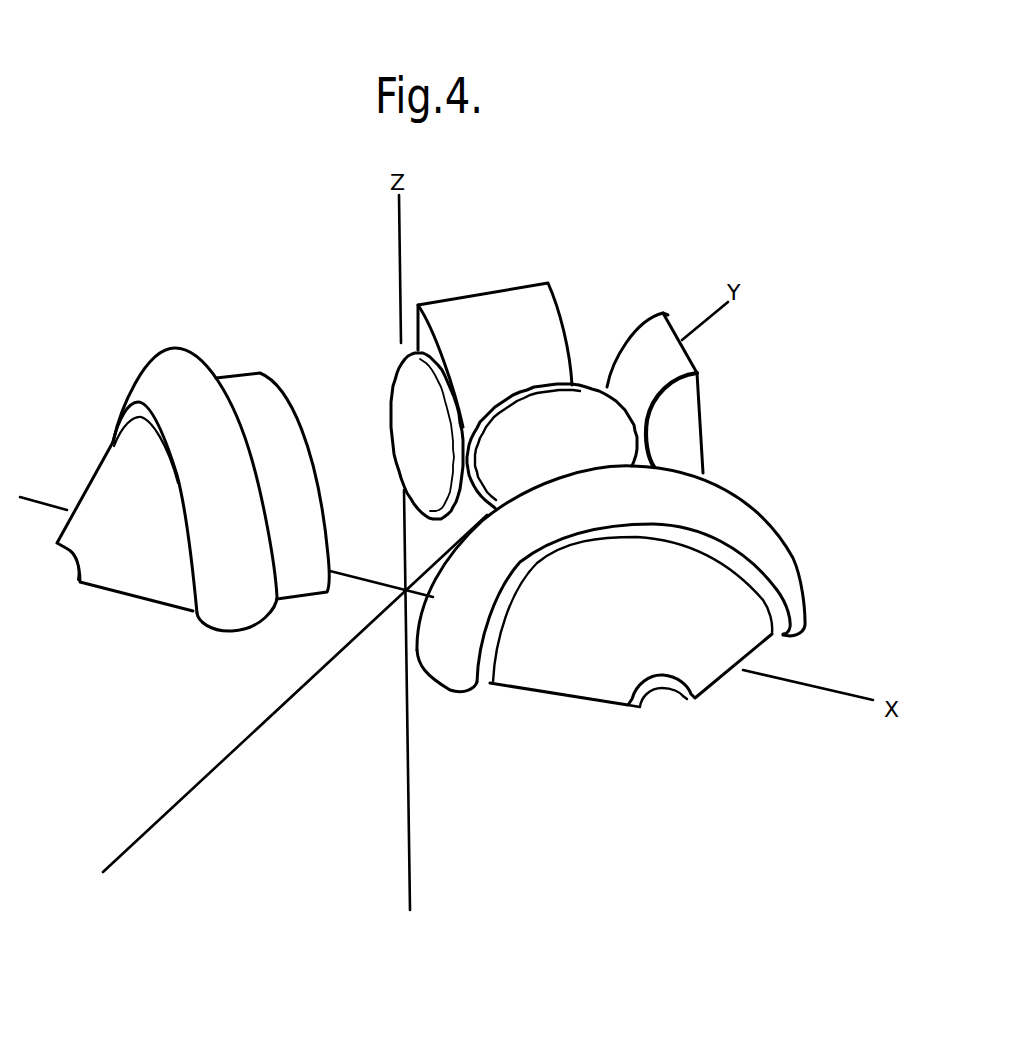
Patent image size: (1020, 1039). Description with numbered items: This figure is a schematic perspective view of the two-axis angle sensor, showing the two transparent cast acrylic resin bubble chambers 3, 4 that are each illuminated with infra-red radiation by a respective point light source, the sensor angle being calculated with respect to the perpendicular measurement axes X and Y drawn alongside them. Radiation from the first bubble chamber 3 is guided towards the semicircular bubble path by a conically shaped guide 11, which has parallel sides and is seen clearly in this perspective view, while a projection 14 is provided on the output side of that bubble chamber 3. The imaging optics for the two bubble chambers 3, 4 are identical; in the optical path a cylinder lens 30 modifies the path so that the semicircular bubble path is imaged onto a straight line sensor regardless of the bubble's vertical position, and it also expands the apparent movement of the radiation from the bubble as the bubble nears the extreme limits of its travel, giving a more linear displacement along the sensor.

The bubble chamber 3 is at (181, 318).
The conically shaped guide 11 is at (107, 488).
The projection 14 is at (260, 373).
The cylinder lens 30 is at (697, 373).
The bubble chamber 4 is at (782, 490).